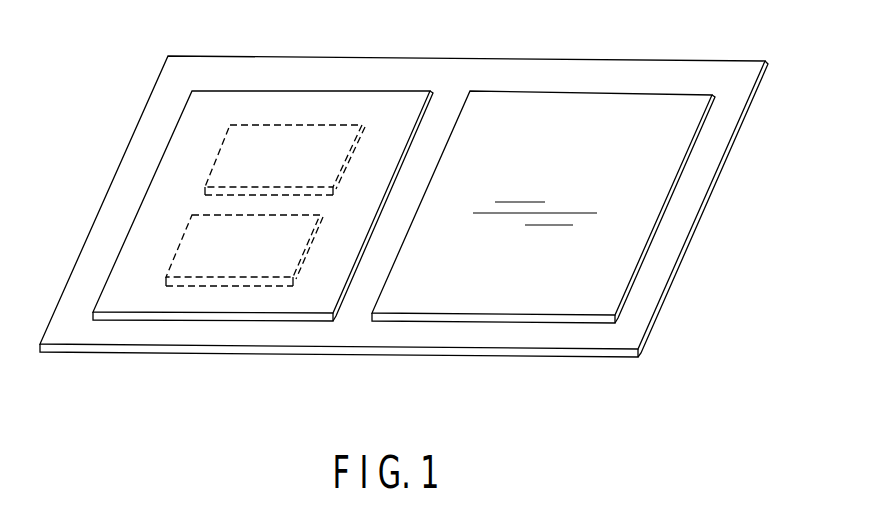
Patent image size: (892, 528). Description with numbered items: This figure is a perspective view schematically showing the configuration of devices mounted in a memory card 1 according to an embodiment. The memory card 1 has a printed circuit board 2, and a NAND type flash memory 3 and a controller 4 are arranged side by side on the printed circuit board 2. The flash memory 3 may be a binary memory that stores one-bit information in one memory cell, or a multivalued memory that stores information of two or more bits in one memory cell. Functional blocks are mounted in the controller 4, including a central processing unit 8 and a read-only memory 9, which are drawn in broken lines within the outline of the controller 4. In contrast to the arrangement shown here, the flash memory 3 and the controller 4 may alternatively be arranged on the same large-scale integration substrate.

The memory card 1 is at (404, 210).
The printed circuit board 2 is at (688, 72).
The NAND type flash memory 3 is at (558, 303).
The controller 4 is at (250, 303).
The central processing unit 8 is at (175, 247).
The read-only memory 9 is at (215, 155).